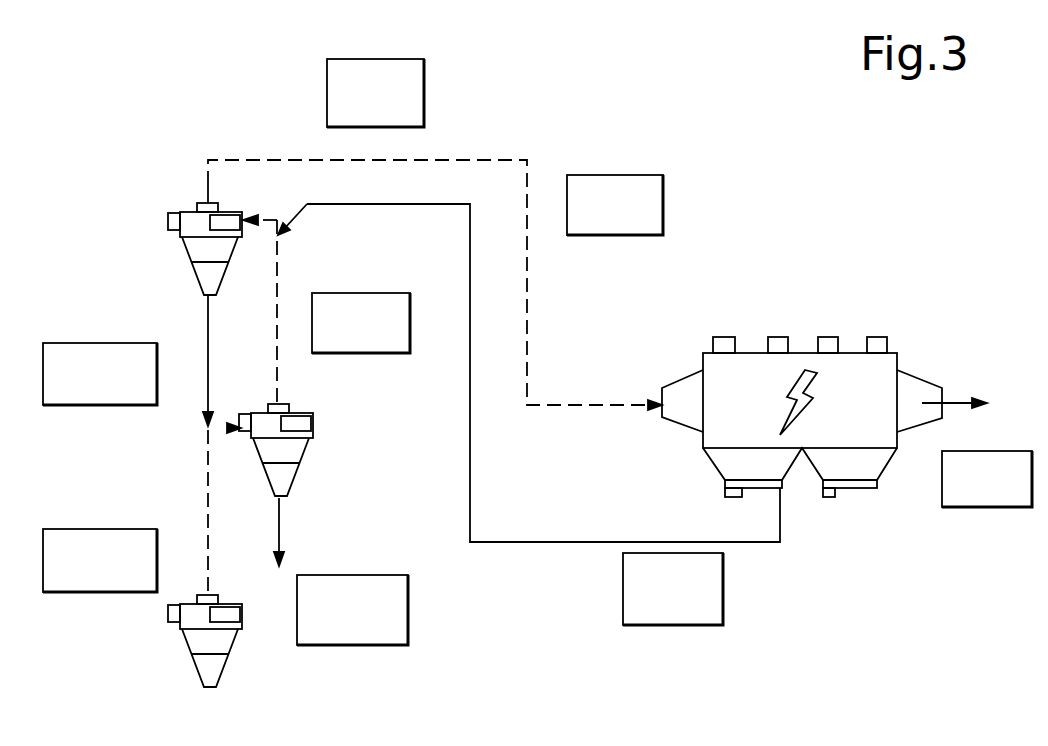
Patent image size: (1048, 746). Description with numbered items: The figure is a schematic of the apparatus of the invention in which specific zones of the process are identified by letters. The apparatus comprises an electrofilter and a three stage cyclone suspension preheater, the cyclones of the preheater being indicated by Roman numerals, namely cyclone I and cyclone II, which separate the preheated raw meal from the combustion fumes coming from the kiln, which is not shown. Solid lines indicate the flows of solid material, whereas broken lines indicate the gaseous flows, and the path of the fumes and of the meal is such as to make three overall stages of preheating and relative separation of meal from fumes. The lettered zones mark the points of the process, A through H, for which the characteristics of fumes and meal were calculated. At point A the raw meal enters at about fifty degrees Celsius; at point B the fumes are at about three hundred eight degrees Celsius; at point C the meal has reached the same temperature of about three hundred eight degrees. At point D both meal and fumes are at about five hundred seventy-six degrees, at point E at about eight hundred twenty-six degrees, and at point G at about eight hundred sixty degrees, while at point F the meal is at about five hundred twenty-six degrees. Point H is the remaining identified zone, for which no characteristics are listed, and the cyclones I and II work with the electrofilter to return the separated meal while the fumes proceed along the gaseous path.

The point A is at (527, 290).
The point B is at (958, 403).
The point C is at (597, 542).
The point D is at (370, 160).
The point E is at (277, 345).
The point F is at (208, 345).
The point G is at (208, 525).
The point H is at (279, 520).
The cyclone I of the suspension preheater I is at (123, 219).
The cyclone II of the suspension preheater II is at (349, 446).